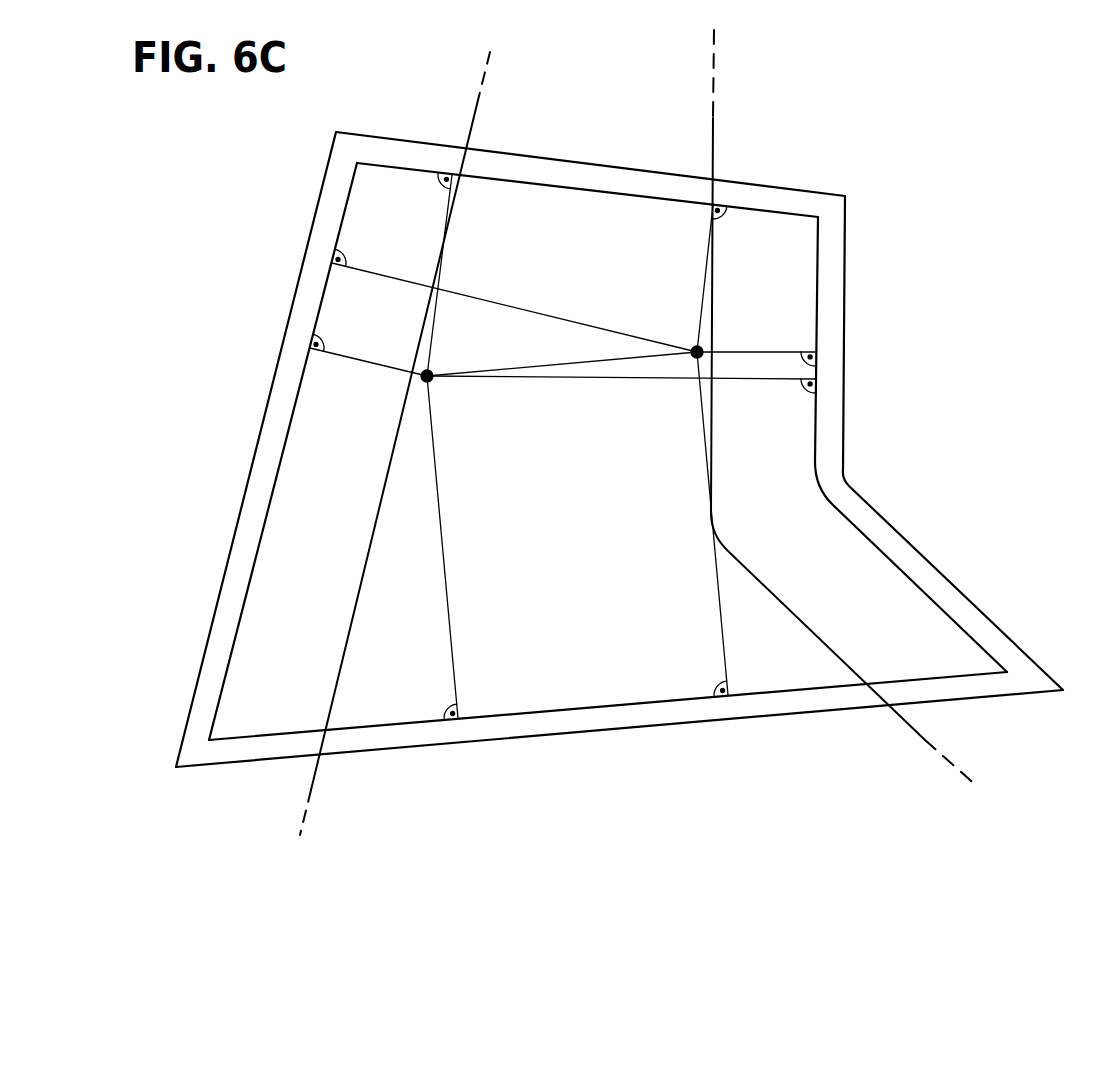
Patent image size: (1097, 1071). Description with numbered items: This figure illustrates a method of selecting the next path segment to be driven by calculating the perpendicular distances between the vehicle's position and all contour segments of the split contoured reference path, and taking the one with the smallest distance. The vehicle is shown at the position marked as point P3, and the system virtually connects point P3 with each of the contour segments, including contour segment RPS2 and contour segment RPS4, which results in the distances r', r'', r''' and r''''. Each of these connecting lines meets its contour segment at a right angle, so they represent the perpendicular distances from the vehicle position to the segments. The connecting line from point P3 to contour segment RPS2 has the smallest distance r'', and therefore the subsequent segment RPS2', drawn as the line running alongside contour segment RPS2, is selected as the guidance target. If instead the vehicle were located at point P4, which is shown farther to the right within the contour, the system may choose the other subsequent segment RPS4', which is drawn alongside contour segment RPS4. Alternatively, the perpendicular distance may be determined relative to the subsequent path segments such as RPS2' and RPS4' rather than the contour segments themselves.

The contour segment RPS2 is at (266, 449).
The subsequent path segment RPS2' is at (380, 443).
The contour segment RPS4 is at (939, 443).
The subsequent path segment RPS4' is at (844, 408).
The point P3 is at (442, 391).
The point P4 is at (680, 330).
The distance r' is at (448, 547).
The distance r'' is at (368, 352).
The distance r''' is at (446, 274).
The distance r'''' is at (621, 394).